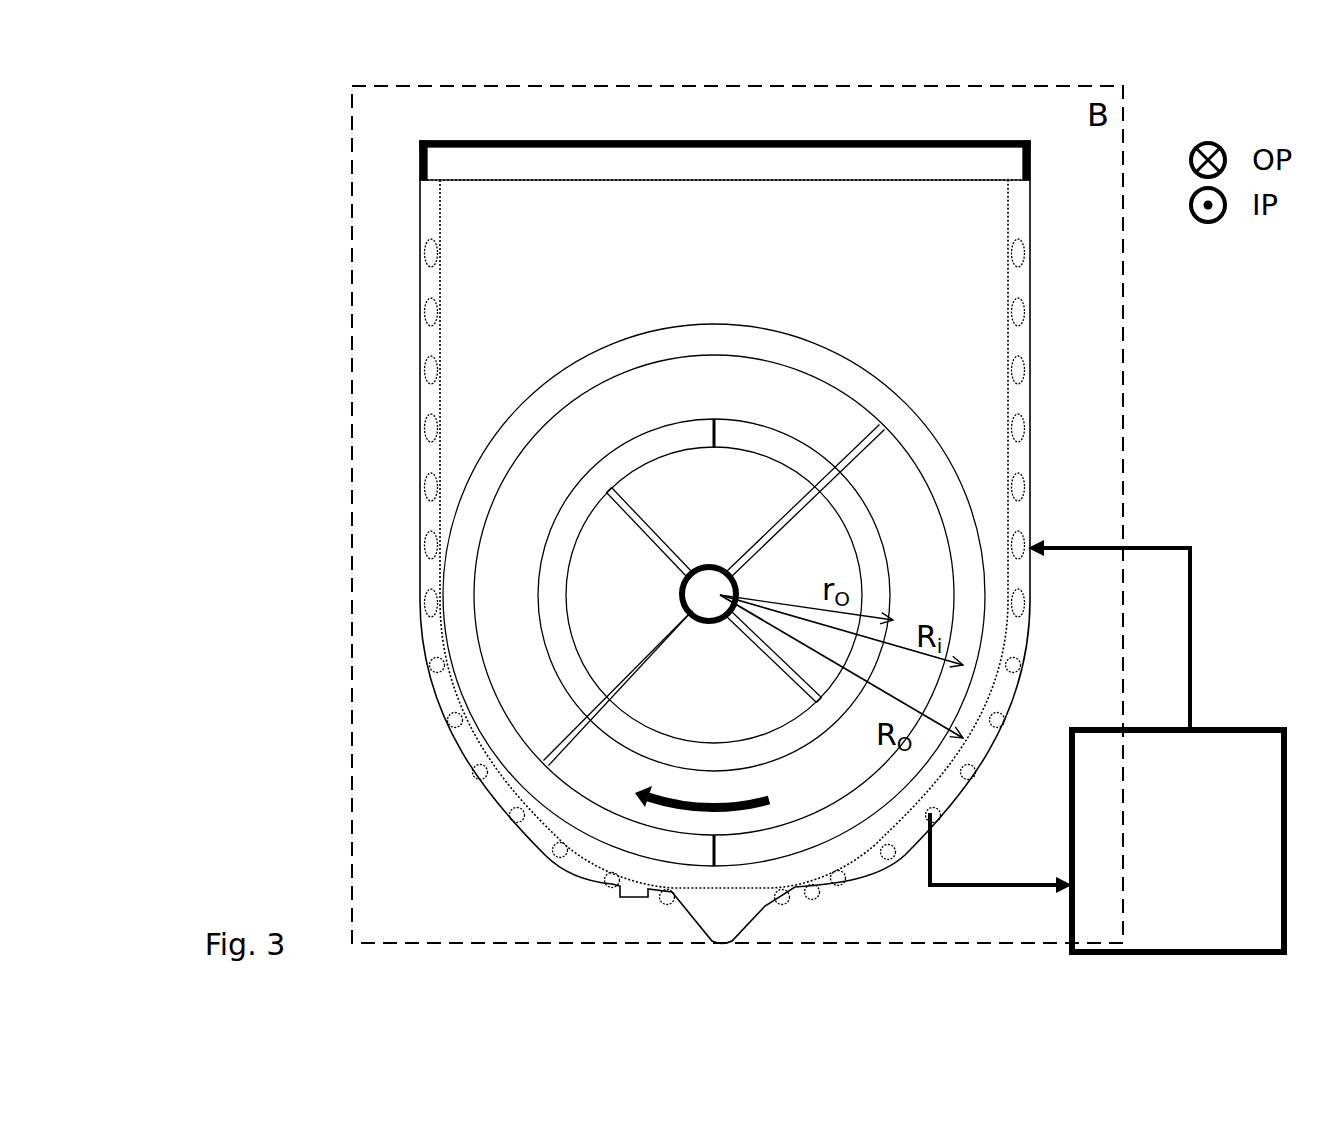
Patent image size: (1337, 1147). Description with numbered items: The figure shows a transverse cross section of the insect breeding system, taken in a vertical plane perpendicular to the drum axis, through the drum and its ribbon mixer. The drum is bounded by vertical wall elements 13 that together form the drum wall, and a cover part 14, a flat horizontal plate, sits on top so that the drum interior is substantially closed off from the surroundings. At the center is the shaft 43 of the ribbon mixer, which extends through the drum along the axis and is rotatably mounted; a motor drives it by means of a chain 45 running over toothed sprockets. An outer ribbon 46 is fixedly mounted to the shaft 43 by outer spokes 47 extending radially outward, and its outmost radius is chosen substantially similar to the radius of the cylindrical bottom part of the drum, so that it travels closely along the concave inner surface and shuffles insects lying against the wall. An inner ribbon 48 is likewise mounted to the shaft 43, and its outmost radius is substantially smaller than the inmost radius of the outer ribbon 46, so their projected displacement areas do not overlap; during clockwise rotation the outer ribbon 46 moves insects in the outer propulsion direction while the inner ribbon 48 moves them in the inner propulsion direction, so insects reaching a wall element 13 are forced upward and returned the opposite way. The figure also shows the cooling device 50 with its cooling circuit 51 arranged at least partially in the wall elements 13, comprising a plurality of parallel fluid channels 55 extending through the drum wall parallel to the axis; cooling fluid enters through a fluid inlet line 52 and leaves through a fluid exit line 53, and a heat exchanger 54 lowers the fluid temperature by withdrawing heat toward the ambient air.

The wall element 13 is at (432, 346).
The cover part 14 is at (840, 155).
The shaft 43 is at (718, 595).
The chain 45 is at (640, 508).
The outer ribbon 46 is at (760, 332).
The outer spoke 47 is at (870, 442).
The inner ribbon 48 is at (688, 440).
The cooling device 50 is at (1232, 680).
The cooling circuit 51 is at (1100, 405).
The fluid inlet line 52 is at (1100, 540).
The fluid exit line 53 is at (990, 880).
The heat exchanger 54 is at (1178, 841).
The fluid channel 55 is at (432, 432).